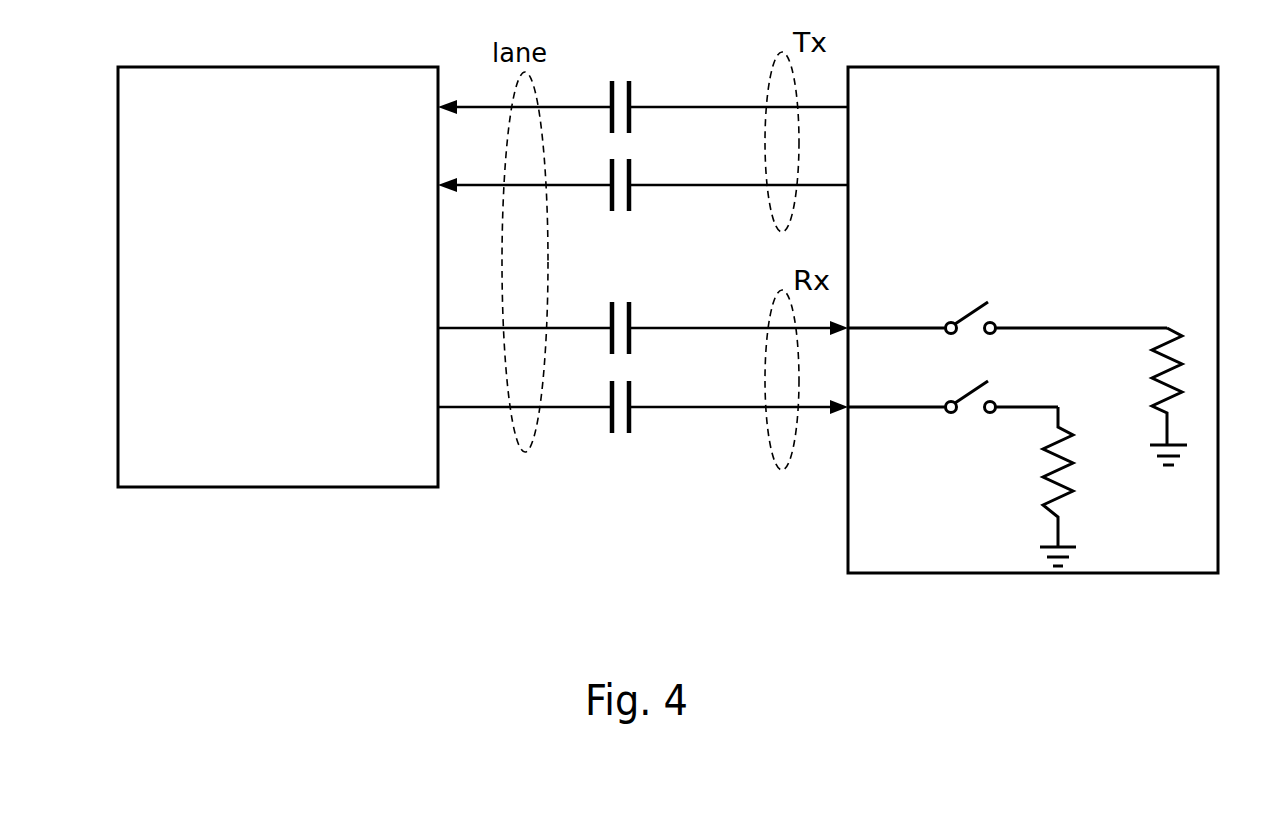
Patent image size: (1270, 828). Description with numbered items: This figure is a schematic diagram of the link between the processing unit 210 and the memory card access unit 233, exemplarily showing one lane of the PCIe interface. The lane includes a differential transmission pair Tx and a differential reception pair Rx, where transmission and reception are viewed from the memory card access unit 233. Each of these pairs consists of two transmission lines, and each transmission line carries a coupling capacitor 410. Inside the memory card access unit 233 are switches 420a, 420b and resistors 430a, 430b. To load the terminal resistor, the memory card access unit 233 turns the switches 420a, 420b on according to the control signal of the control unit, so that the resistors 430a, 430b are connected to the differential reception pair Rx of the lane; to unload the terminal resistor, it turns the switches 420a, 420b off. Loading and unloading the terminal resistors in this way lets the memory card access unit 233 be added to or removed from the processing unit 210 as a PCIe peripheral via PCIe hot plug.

The processing unit 210 is at (281, 66).
The memory card access unit 233 is at (1027, 66).
The coupling capacitor 410 is at (643, 68).
The switch 420a is at (942, 384).
The switch 420b is at (940, 300).
The resistor 430a is at (1043, 478).
The resistor 430b is at (1152, 405).